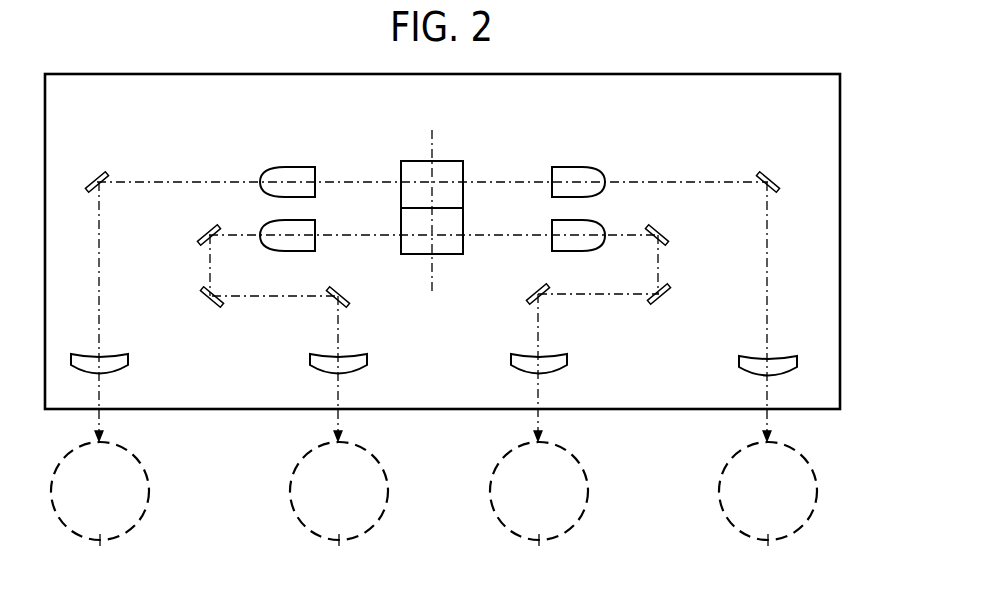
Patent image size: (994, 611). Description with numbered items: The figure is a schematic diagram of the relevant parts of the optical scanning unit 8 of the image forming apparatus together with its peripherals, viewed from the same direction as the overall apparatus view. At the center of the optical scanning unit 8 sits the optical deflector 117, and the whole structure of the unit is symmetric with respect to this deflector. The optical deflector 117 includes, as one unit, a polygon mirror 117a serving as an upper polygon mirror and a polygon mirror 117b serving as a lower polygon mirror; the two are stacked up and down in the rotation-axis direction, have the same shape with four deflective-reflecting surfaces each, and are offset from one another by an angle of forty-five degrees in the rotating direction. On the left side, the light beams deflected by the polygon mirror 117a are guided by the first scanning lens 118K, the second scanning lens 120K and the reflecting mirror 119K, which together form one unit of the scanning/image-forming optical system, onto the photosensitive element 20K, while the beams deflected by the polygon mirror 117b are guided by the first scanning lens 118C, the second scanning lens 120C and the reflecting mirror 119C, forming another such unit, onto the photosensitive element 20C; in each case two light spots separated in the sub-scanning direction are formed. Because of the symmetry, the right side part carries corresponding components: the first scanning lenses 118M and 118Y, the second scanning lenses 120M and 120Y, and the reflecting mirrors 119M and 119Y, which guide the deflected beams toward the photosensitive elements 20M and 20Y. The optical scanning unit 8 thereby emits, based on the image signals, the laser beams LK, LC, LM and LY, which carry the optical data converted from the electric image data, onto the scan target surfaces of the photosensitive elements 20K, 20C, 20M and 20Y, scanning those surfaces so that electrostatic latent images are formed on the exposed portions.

The optical scanning unit 8 is at (713, 67).
The optical deflector 117 is at (448, 190).
The polygon mirror (upper polygon mirror) 117a is at (458, 161).
The polygon mirror (lower polygon mirror) 117b is at (453, 256).
The first scanning lens 118K is at (300, 166).
The first scanning lens 118C is at (282, 253).
The first scanning lens 118M is at (588, 253).
The first scanning lens 118Y is at (584, 166).
The reflecting mirror 119K is at (92, 176).
The reflecting mirror 119C is at (203, 230).
The reflecting mirror 119M is at (676, 218).
The reflecting mirror 119Y is at (785, 164).
The second scanning lens 120K is at (130, 366).
The second scanning lens 120C is at (368, 365).
The second scanning lens 120M is at (568, 364).
The second scanning lens 120Y is at (738, 365).
The laser beam LK is at (102, 412).
The laser beam LC is at (341, 412).
The laser beam LM is at (541, 412).
The laser beam LY is at (770, 412).
The photosensitive element 20K is at (102, 544).
The photosensitive element 20C is at (341, 544).
The photosensitive element 20M is at (541, 544).
The photosensitive element 20Y is at (770, 544).